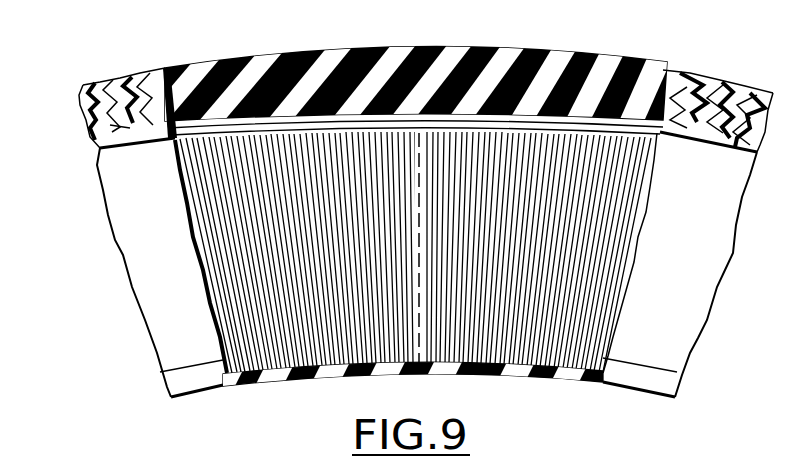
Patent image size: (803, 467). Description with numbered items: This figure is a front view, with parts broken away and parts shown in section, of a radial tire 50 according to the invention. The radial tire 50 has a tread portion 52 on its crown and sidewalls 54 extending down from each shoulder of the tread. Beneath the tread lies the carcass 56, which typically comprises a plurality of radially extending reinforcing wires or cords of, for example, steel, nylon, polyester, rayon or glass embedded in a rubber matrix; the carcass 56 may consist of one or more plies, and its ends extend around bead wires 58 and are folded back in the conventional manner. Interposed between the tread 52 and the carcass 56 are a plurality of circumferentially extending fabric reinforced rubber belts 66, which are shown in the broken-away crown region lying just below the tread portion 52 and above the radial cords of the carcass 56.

The radial tire 50 is at (108, 305).
The tread portion 52 is at (402, 106).
The sidewalls 54 is at (685, 331).
The carcass 56 is at (628, 190).
The bead wires 58 is at (517, 373).
The belts 66 is at (553, 128).